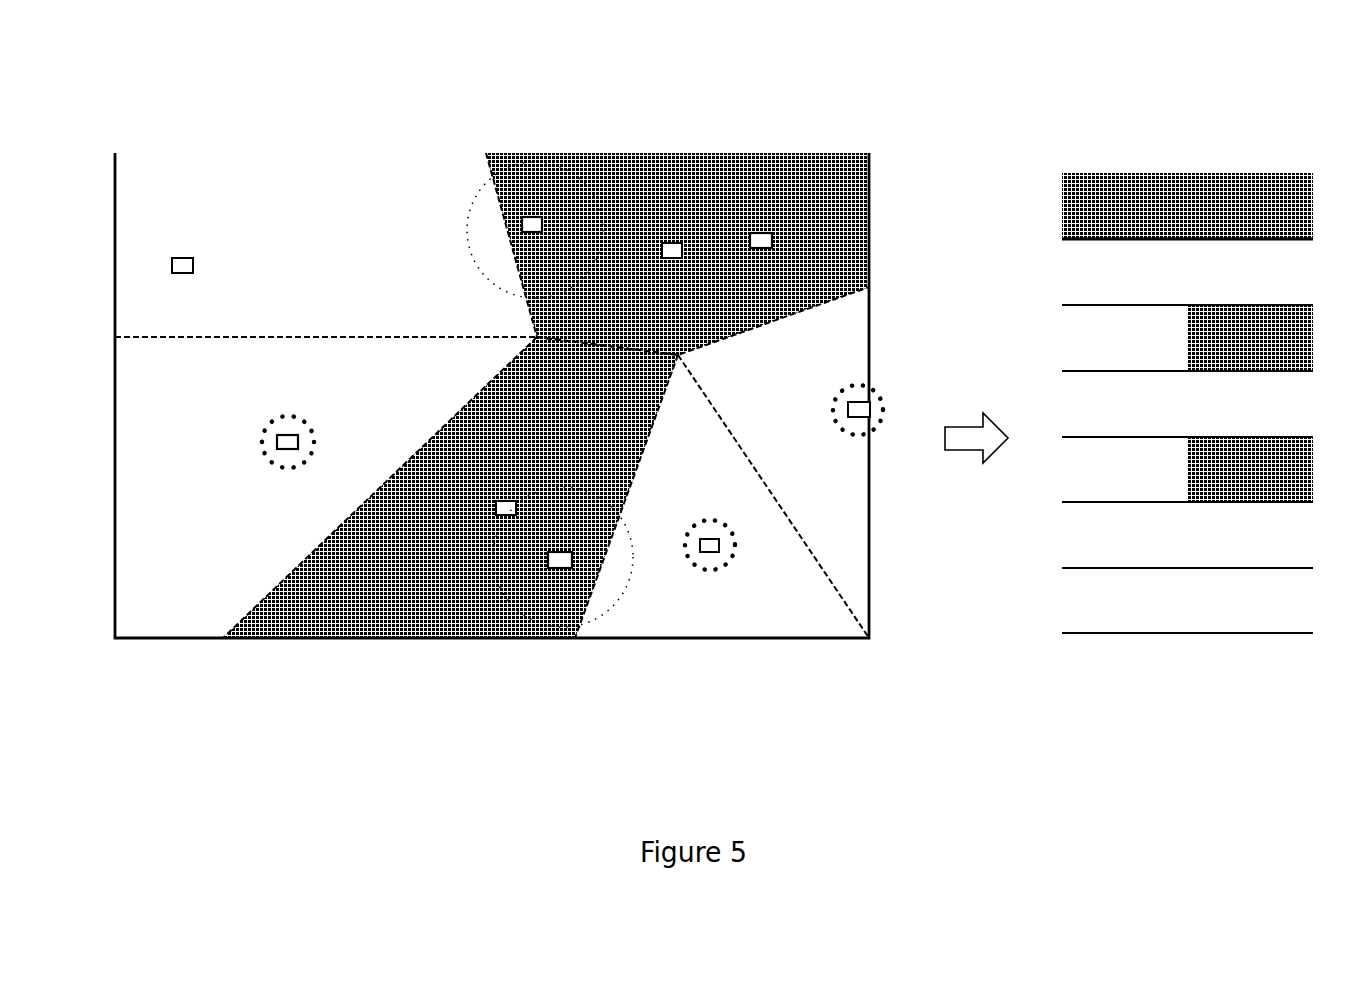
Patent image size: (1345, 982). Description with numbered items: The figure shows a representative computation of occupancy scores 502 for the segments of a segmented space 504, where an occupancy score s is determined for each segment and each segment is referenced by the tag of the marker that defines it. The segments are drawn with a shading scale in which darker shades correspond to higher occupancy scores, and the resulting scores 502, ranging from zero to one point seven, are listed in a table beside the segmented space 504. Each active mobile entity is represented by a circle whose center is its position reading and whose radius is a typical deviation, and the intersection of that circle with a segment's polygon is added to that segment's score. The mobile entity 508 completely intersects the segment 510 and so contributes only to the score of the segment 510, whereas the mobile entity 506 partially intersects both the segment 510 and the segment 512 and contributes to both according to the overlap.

The occupancy scores 502 is at (1130, 690).
The segmented space 504 is at (496, 414).
The mobile entity 506 is at (535, 138).
The mobile entity 508 is at (738, 147).
The segment 510 is at (655, 155).
The segment 512 is at (333, 155).